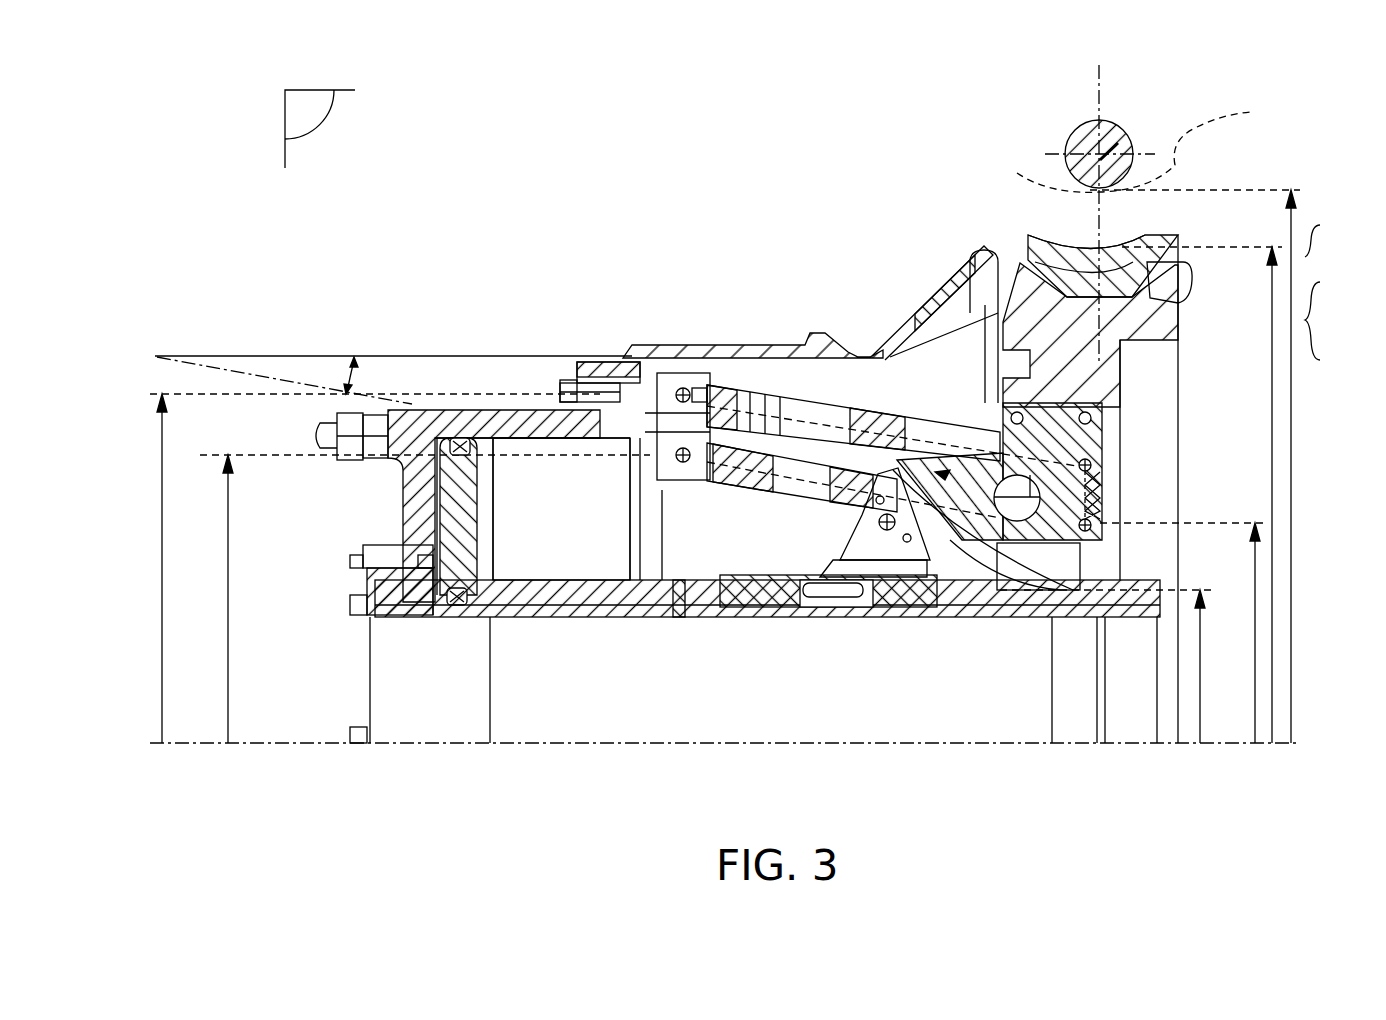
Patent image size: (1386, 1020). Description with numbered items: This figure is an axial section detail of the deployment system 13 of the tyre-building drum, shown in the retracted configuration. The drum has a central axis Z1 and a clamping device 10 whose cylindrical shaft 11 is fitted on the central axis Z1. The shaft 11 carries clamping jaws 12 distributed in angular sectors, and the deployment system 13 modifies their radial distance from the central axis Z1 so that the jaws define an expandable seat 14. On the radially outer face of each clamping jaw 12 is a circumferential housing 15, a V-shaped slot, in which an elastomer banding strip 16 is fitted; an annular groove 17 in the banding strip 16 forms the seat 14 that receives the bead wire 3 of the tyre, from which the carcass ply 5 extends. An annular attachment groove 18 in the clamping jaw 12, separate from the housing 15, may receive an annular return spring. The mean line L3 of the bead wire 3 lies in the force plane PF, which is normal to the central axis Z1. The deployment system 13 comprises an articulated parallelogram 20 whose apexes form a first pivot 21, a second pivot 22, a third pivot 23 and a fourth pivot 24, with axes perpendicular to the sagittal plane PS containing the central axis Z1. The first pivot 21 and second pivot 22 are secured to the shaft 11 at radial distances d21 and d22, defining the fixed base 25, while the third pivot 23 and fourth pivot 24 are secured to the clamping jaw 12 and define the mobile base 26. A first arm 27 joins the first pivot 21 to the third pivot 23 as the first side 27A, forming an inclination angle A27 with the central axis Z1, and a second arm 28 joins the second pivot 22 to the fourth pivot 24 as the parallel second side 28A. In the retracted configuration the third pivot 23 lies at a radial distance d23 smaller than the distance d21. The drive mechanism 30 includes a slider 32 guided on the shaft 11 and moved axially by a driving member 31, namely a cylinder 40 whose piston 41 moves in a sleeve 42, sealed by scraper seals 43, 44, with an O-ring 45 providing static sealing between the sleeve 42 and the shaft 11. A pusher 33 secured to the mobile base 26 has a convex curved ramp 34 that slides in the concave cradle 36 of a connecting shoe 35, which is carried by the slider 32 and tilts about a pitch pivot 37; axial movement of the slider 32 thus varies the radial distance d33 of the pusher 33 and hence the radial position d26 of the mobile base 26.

The bead wire 3 is at (1083, 143).
The mean line L3 is at (1118, 143).
The carcass ply 5 is at (1141, 147).
The clamping device 10 is at (702, 225).
The shaft 11 is at (537, 612).
The clamping jaws 12 is at (1030, 307).
The deployment system 13 is at (716, 355).
The expandable seat 14 is at (1068, 205).
The circumferential housing 15 is at (1157, 290).
The banding strip 16 is at (1056, 222).
The annular groove 17 is at (1138, 237).
The annular attachment groove 18 is at (1092, 418).
The articulated parallelogram 20 is at (810, 311).
The first pivot 21 is at (602, 380).
The second pivot 22 is at (682, 448).
The third pivot 23 is at (1087, 530).
The fourth pivot 24 is at (1092, 465).
The fixed base 25 is at (647, 375).
The mobile base 26 is at (1095, 503).
The first arm 27 is at (813, 625).
The first side 27A is at (787, 480).
The second arm 28 is at (892, 371).
The second side 28A is at (813, 407).
The drive mechanism 30 is at (794, 622).
The driving member 31 is at (417, 587).
The slider 32 is at (865, 580).
The pusher 33 is at (1057, 528).
The convex curved ramp 34 is at (1014, 602).
The connecting shoe 35 is at (916, 640).
The concave cradle 36 is at (1057, 582).
The pitch pivot 37 is at (925, 540).
The cylinder 40 is at (429, 512).
The piston 41 is at (457, 525).
The sleeve 42 is at (510, 547).
The scraper seal 43 is at (440, 612).
The scraper seal 44 is at (458, 437).
The O-ring 45 is at (438, 594).
The inclination angle A27 is at (352, 378).
The sagittal plane PS is at (318, 123).
The force plane PF is at (1100, 330).
The central axis Z1 is at (195, 745).
The first radial distance d21 is at (246, 599).
The second radial distance d22 is at (181, 568).
The radial distance of the third pivot d23 is at (1240, 633).
The radial position of the mobile base d26 is at (1258, 660).
The radial distance of the pusher d33 is at (1124, 666).